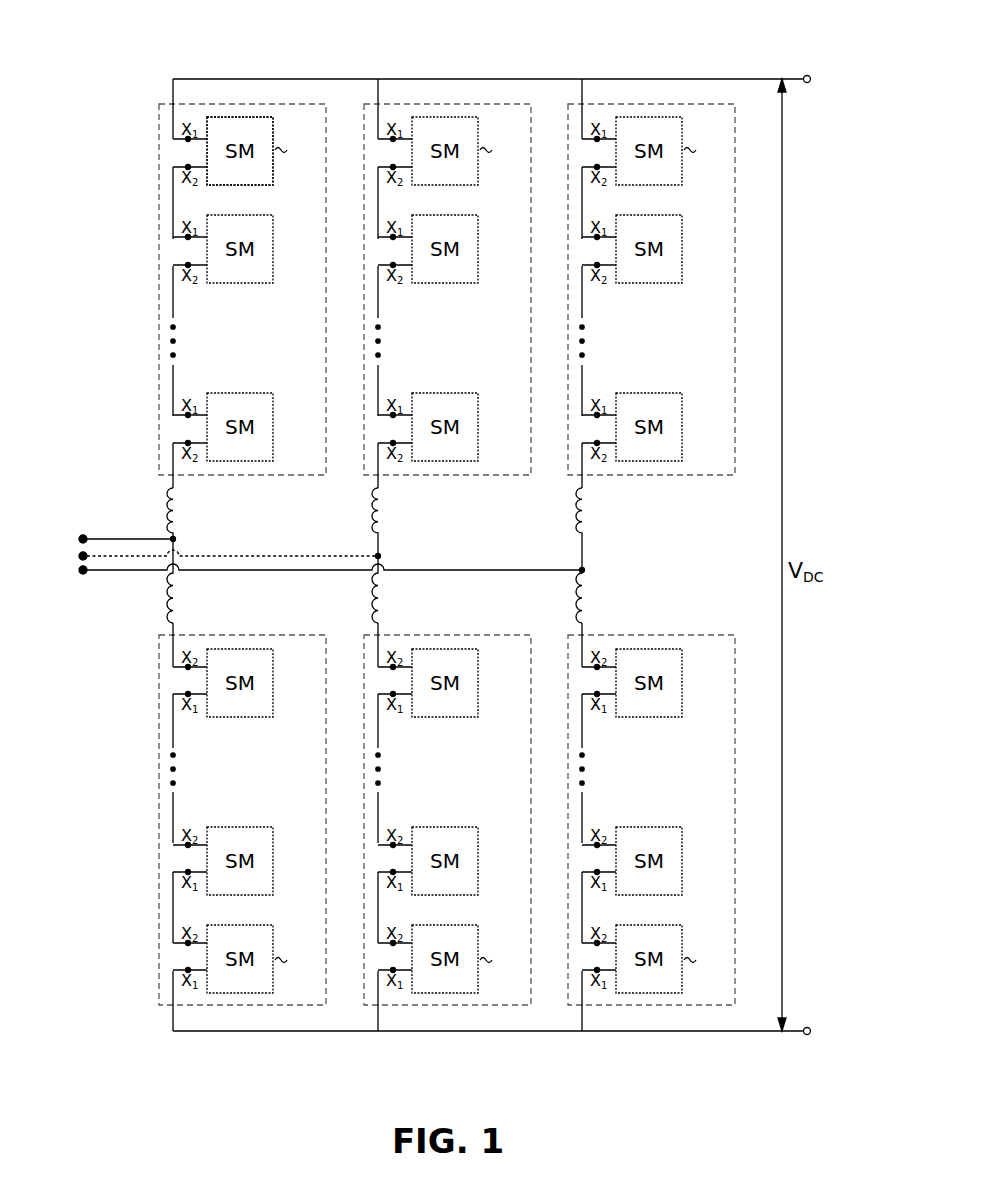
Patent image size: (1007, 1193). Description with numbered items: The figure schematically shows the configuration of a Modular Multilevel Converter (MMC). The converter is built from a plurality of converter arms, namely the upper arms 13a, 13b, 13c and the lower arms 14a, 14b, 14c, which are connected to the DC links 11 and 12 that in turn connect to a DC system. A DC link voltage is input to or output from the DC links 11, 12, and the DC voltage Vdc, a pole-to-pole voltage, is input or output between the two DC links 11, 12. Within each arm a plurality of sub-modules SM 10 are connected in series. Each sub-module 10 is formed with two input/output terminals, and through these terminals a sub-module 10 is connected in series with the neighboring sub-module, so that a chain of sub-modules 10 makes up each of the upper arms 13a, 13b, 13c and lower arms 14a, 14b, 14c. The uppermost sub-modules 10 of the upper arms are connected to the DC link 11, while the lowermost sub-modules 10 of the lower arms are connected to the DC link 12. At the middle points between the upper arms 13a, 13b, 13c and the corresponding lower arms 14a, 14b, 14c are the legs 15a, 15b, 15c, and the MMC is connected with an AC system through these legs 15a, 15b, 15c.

The sub-module 10 is at (275, 150).
The DC link 11 is at (744, 77).
The DC link 12 is at (745, 1033).
The upper arm 13a is at (242, 261).
The upper arm 13b is at (445, 104).
The upper arm 13c is at (648, 104).
The lower arm 14a is at (242, 1006).
The lower arm 14b is at (447, 1006).
The lower arm 14c is at (651, 1006).
The leg 15a is at (86, 537).
The leg 15b is at (130, 551).
The leg 15c is at (114, 572).